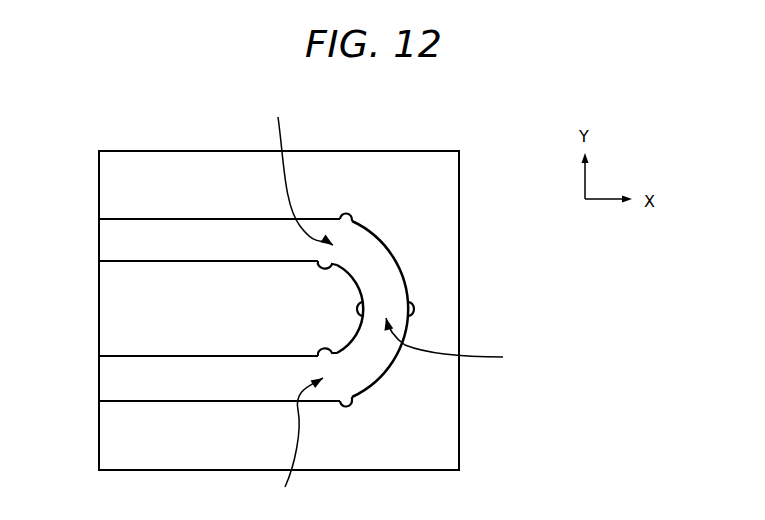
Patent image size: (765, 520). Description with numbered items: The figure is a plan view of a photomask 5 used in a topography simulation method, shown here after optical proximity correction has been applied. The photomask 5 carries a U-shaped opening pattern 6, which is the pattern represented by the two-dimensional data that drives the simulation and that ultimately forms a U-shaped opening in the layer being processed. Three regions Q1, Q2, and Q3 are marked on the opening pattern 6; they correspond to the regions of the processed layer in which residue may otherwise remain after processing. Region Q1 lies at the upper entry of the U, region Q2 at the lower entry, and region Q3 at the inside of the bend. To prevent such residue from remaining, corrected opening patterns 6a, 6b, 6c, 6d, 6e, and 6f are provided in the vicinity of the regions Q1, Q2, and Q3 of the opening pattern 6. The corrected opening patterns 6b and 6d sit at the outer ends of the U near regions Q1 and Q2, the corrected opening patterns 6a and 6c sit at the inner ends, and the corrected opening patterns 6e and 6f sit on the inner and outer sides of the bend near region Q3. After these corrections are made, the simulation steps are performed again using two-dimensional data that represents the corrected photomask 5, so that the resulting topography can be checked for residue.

The photomask 5 is at (420, 178).
The opening pattern 6 is at (382, 277).
The corrected opening pattern 6a is at (323, 266).
The corrected opening pattern 6b is at (350, 216).
The corrected opening pattern 6c is at (323, 352).
The corrected opening pattern 6d is at (350, 403).
The corrected opening pattern 6e is at (356, 308).
The corrected opening pattern 6f is at (414, 308).
The region Q1 is at (297, 167).
The region Q2 is at (295, 449).
The region Q3 is at (461, 346).